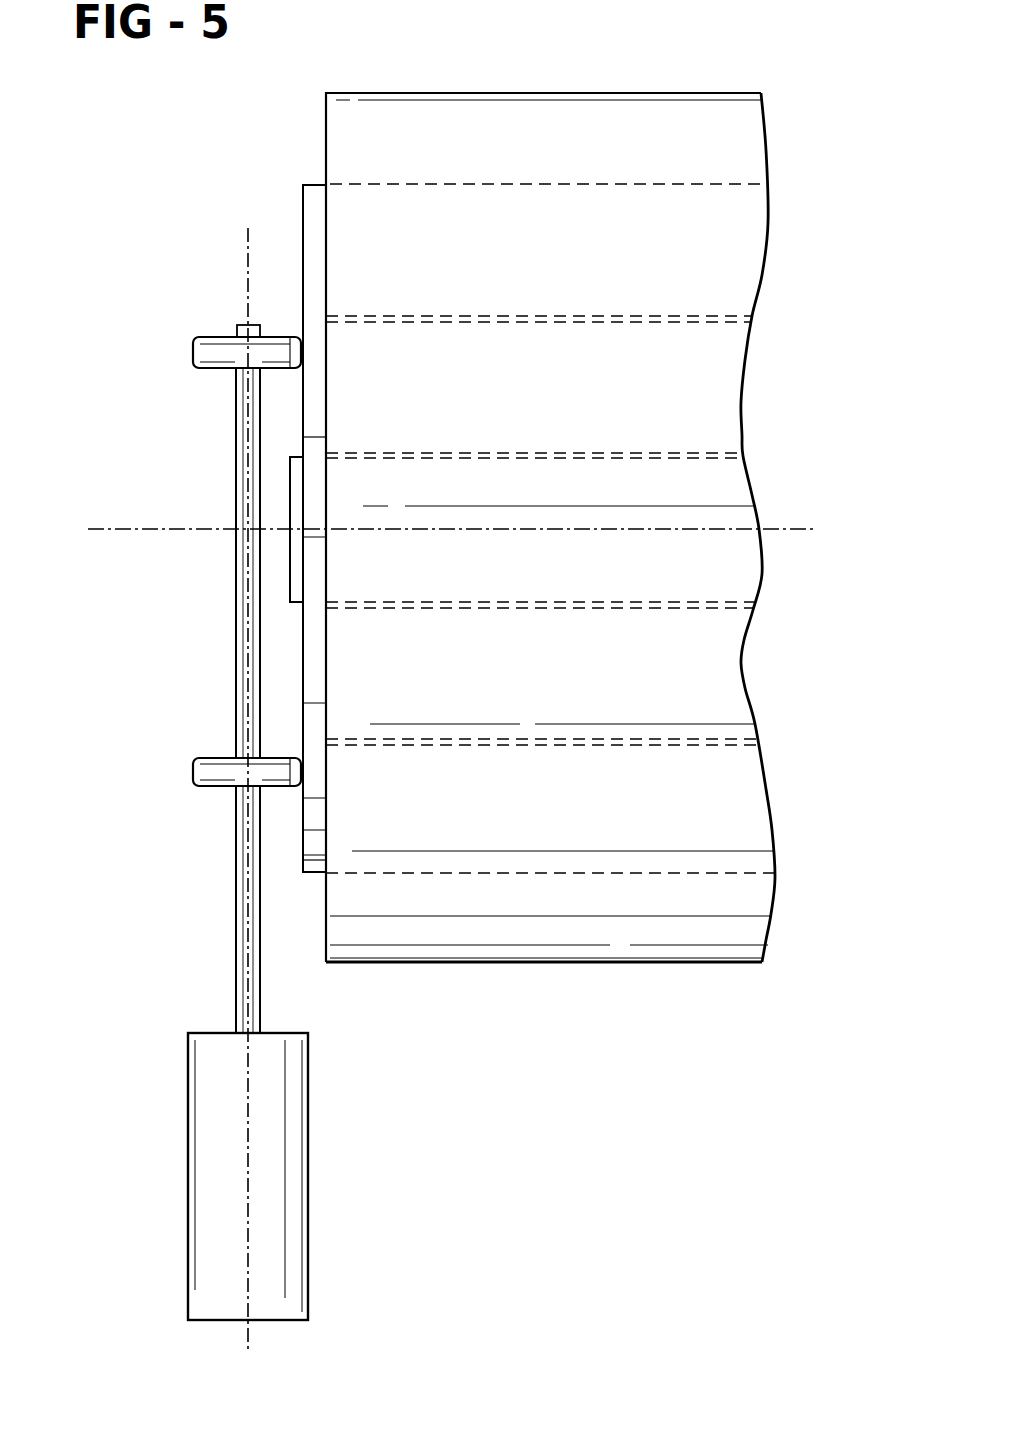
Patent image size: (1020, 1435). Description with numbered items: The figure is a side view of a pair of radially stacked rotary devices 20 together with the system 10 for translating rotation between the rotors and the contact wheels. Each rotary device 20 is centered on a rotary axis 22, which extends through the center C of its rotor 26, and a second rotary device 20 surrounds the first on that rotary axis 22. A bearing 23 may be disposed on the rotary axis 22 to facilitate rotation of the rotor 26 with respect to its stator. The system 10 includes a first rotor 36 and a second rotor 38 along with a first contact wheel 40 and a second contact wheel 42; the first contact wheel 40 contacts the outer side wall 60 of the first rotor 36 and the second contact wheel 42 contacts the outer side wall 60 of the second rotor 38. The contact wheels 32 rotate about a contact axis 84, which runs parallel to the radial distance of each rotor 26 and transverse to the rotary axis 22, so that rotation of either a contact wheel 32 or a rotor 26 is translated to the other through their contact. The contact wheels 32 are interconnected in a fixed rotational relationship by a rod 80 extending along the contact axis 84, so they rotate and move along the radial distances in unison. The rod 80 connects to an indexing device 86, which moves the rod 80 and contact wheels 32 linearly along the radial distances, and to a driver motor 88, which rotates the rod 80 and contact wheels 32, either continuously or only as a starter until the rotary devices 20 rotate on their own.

The system 10 is at (222, 968).
The rotary device 20 is at (310, 180).
The rotary axis 22 is at (138, 527).
The bearing 23 is at (295, 563).
The rotor 26 is at (308, 245).
The contact wheel 32 is at (200, 355).
The first rotor 36 is at (318, 860).
The second rotor 38 is at (317, 435).
The first contact wheel 40 is at (227, 770).
The second contact wheel 42 is at (227, 350).
The outer side wall 60 is at (298, 205).
The rod 80 is at (242, 1003).
The contact axis 84 is at (244, 271).
The indexing device 86 is at (209, 1097).
The driver motor 88 is at (209, 1185).